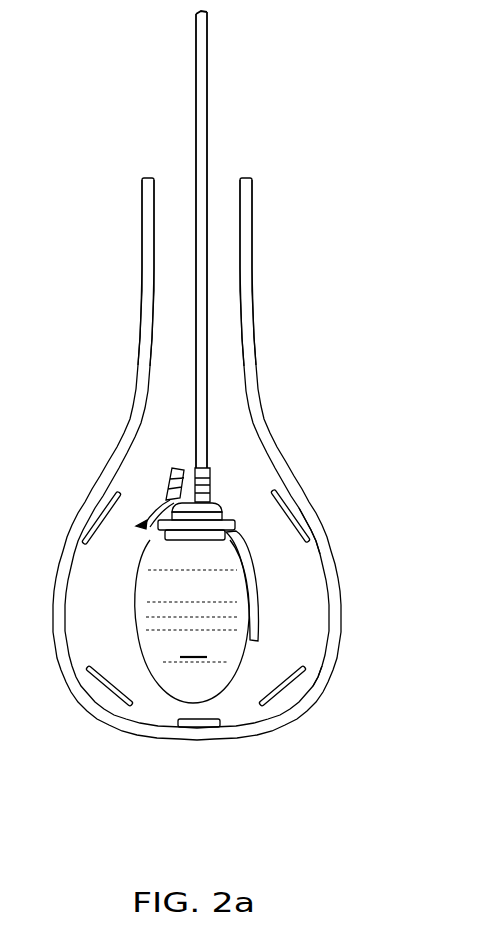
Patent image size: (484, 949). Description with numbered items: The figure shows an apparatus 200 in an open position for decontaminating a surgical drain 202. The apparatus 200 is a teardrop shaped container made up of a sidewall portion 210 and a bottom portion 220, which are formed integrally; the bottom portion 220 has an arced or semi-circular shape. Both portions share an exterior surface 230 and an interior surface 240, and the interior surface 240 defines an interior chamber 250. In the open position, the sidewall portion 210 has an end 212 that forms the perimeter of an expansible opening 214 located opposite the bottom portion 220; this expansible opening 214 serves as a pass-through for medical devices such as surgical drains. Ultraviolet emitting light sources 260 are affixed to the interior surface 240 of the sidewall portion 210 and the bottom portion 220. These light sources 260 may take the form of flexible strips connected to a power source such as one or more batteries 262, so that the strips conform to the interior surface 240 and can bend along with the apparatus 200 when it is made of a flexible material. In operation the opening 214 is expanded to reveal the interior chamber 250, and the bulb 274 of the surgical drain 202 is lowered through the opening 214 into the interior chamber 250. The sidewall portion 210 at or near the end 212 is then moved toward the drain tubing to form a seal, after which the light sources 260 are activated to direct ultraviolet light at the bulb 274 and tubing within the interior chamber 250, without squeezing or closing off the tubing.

The apparatus 200 is at (219, 472).
The surgical drain 202 is at (157, 590).
The sidewall portion 210 is at (219, 465).
The end 212 is at (243, 180).
The expansible opening 214 is at (168, 182).
The bottom portion 220 is at (137, 720).
The exterior surface 230 is at (322, 532).
The interior surface 240 is at (323, 583).
The interior chamber 250 is at (310, 635).
The ultraviolet emitting light sources 260 is at (93, 518).
The batteries 262 is at (205, 728).
The bulb 274 is at (193, 644).